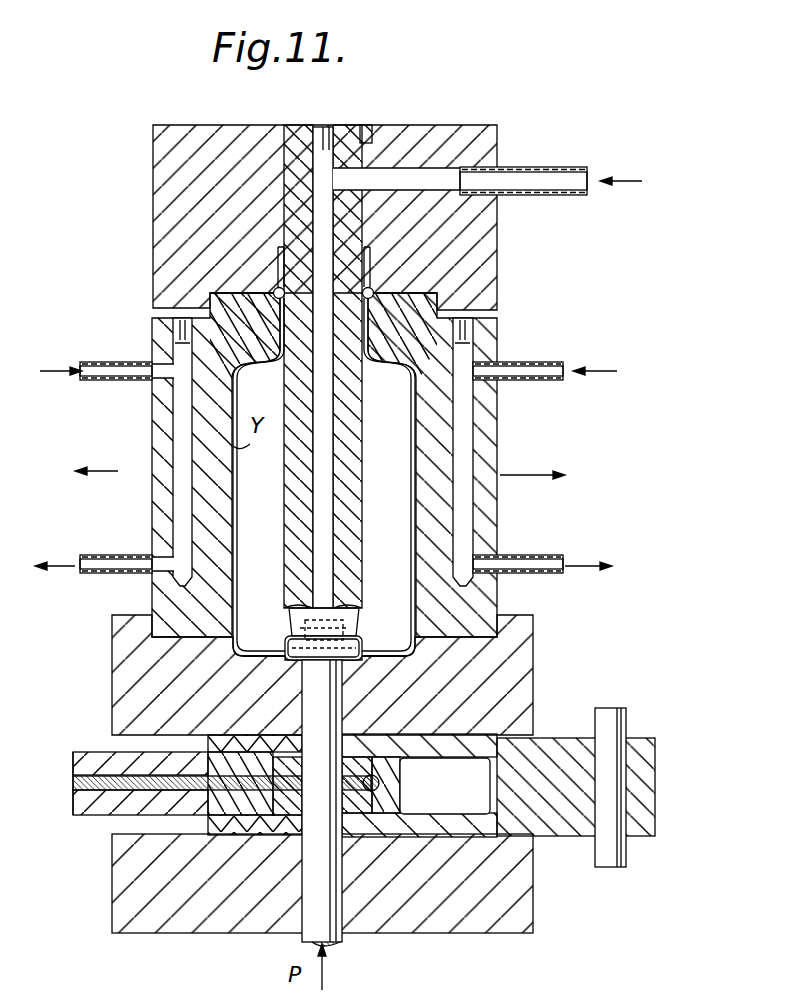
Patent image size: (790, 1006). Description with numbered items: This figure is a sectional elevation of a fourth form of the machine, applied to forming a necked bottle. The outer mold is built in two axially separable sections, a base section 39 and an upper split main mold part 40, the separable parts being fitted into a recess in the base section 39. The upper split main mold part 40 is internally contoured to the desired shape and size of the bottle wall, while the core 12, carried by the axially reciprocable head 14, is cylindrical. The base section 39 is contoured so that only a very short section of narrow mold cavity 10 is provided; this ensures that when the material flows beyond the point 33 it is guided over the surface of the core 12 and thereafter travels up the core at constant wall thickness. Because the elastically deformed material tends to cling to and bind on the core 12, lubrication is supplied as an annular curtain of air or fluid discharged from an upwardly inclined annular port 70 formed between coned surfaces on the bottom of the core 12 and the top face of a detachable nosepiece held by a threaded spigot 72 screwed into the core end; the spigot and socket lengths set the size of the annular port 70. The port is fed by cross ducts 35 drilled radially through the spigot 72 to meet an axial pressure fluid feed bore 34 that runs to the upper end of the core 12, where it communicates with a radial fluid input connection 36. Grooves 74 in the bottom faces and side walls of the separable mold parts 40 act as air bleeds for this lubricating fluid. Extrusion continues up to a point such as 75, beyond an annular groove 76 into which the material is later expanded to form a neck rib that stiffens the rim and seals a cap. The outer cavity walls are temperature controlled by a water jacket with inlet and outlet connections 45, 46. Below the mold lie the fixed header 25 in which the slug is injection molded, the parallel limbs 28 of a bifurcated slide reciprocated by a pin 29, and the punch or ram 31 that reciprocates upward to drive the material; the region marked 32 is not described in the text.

The axially reciprocable head 14 is at (162, 141).
The core 12 is at (297, 264).
The annular groove 76 is at (273, 291).
The point beyond the annular groove 75 is at (372, 276).
The radial fluid input connection 36 is at (522, 168).
The water jacket inlet connection 45 is at (128, 362).
The water jacket outlet connection 46 is at (98, 556).
The upper split main mold part 40 is at (152, 528).
The axial pressure fluid feed bore 34 is at (323, 446).
The grooves 74 is at (200, 634).
The threaded spigot 72 is at (292, 612).
The annular port 70 is at (290, 640).
The cross ducts 35 is at (354, 616).
The mold cavity 10 is at (262, 661).
The bore portion 32 is at (292, 668).
The point 33 is at (362, 662).
The fixed header 25 is at (122, 820).
The base section of the mold 39 is at (152, 908).
The parallel limbs of bifurcated slide 28 is at (553, 838).
The pin 29 is at (610, 856).
The punch or ram 31 is at (330, 944).